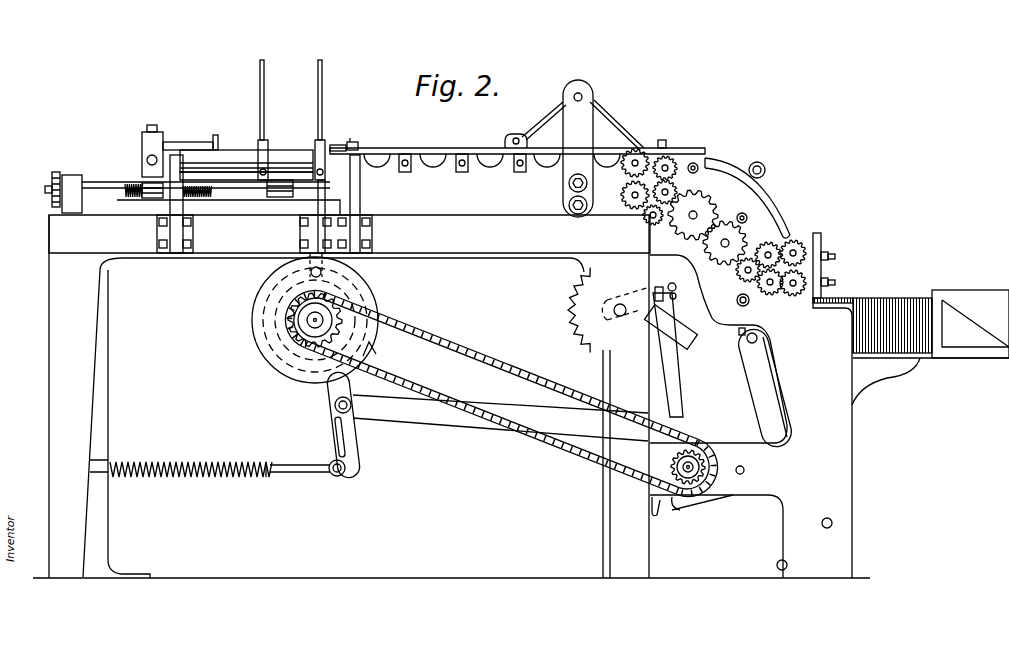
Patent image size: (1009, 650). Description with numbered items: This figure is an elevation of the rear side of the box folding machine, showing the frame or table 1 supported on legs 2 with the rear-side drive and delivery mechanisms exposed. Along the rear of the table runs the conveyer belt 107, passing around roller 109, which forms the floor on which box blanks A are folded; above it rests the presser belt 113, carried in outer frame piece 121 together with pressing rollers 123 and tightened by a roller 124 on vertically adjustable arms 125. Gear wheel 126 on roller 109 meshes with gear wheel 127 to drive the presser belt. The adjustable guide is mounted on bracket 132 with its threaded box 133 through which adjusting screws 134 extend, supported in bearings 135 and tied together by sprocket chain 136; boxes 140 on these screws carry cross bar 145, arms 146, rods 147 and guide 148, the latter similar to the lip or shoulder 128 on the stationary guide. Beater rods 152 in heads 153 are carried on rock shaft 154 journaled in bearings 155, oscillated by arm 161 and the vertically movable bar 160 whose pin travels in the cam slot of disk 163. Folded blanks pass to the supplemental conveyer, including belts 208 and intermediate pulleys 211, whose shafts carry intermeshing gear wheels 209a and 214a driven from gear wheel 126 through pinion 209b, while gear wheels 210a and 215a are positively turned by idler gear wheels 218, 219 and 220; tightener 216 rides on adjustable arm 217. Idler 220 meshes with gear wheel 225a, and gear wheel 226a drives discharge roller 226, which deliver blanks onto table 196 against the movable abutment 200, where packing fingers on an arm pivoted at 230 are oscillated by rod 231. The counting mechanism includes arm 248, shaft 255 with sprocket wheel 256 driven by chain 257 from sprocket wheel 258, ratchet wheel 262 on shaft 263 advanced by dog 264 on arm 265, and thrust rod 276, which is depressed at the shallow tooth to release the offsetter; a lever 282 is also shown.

The frame or table 1 is at (349, 226).
The legs 2 is at (451, 396).
The belt 107 is at (127, 177).
The roller 109 is at (645, 212).
The presser belt 113 is at (542, 127).
The outer frame piece 121 is at (517, 178).
The pressing rollers 123 is at (462, 153).
The roller 124 is at (585, 80).
The vertically adjustable arms 125 is at (573, 140).
The gear wheel 126 is at (628, 203).
The gear wheel 127 is at (643, 155).
The lip or shoulder 128 is at (353, 140).
The bracket 132 is at (246, 181).
The threaded box 133 is at (278, 196).
The adjusting screws 134 is at (203, 197).
The bearings 135 is at (75, 180).
The sprocket chain 136 is at (50, 180).
The boxes 140 is at (157, 200).
The cross bar 145 is at (157, 150).
The arms 146 is at (157, 137).
The rods 147 is at (187, 143).
The guide 148 is at (215, 137).
The beater rods 152 is at (333, 83).
The heads 153 is at (334, 148).
The rock shaft 154 is at (235, 150).
The bearings 155 is at (360, 197).
The vertically movable bar 160 is at (317, 203).
The arm 161 is at (306, 157).
The disk 163 is at (372, 290).
The table 196 is at (923, 358).
The abutment 200 is at (978, 330).
The belts 208 is at (774, 208).
The gear wheel 209a is at (672, 185).
The pinion 209b is at (650, 228).
The gear wheel 210a is at (771, 245).
The intermediate pulleys 211 is at (747, 217).
The gear wheel 214a is at (673, 162).
The gear wheel 215a is at (800, 245).
The tightener 216 is at (766, 172).
The adjustable arm 217 is at (738, 163).
The idler gear wheel 218 is at (705, 212).
The idler gear wheel 219 is at (737, 238).
The idler gear wheel 220 is at (748, 277).
The gear wheel 225a is at (768, 288).
The discharge roller 226 is at (677, 276).
The gear wheel 226a is at (793, 297).
The pivot 230 is at (786, 565).
The rod 231 is at (500, 418).
The arm 248 is at (693, 502).
The shaft 255 is at (693, 467).
The sprocket wheel 256 is at (691, 442).
The chain 257 is at (584, 457).
The sprocket wheel 258 is at (307, 340).
The ratchet wheel 262 is at (587, 307).
The shaft 263 is at (615, 317).
The pawl or dog 264 is at (685, 323).
The arm 265 is at (657, 300).
The thrust rod 276 is at (673, 383).
The lever 282 is at (353, 447).
The box blanks A is at (882, 307).